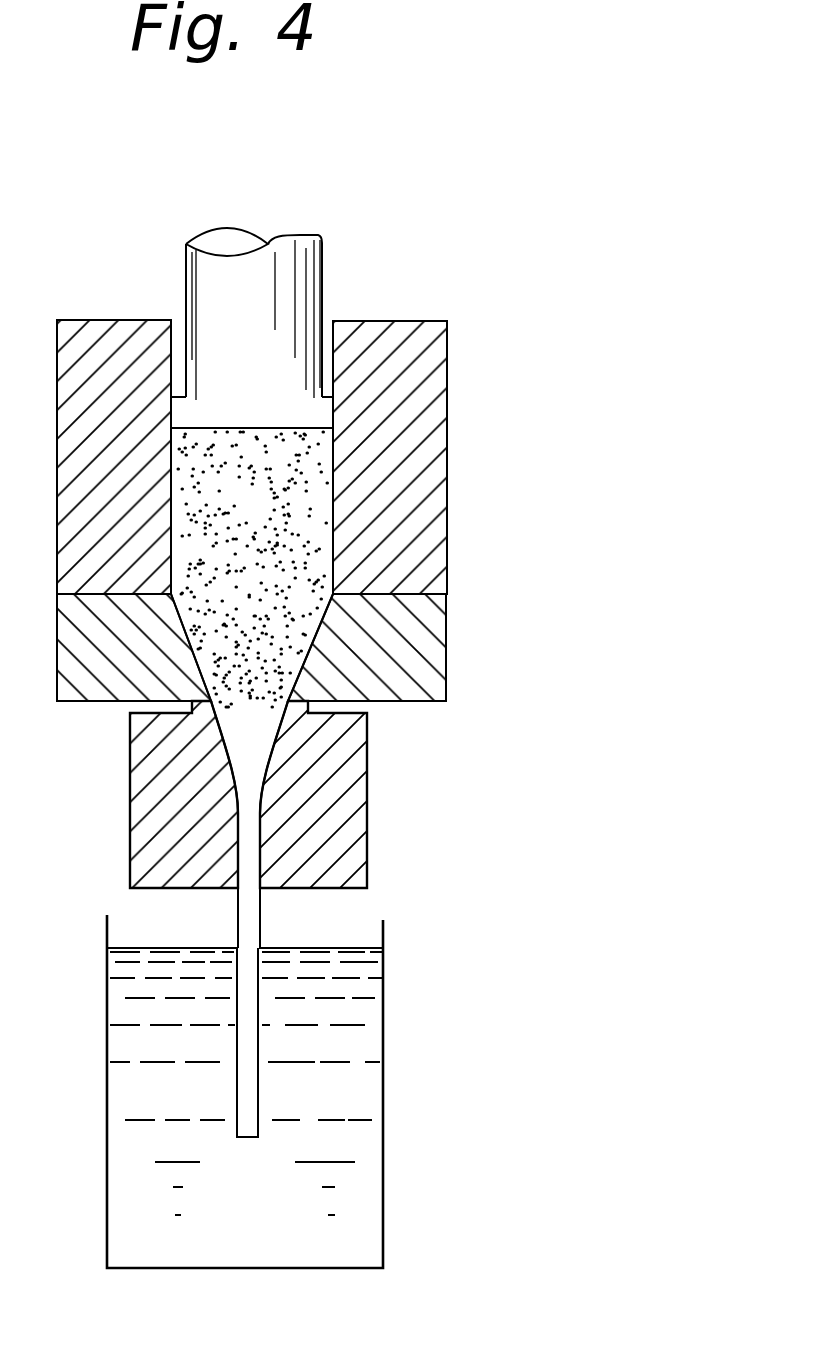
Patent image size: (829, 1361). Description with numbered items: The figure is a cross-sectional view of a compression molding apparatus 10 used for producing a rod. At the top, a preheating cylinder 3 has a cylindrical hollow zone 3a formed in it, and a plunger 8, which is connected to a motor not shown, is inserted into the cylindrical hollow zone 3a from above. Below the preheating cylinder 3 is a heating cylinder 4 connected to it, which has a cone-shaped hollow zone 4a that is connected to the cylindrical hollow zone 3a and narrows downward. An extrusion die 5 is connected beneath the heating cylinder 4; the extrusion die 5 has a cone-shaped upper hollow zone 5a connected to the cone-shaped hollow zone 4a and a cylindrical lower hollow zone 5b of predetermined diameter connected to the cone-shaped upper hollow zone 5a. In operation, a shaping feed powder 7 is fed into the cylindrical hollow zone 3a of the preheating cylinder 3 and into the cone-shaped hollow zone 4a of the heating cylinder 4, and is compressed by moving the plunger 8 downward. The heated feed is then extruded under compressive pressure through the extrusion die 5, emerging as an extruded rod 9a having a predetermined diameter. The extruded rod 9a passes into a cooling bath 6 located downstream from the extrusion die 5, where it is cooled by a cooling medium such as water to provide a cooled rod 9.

The compression molding apparatus 10 is at (146, 254).
The plunger 8 is at (307, 287).
The preheating cylinder 3 is at (397, 398).
The cylindrical hollow zone 3a is at (318, 483).
The shaping feed powder 7 is at (252, 567).
The heating cylinder 4 is at (417, 648).
The cone-shaped hollow zone 4a is at (287, 630).
The extrusion die 5 is at (332, 786).
The cone-shaped upper hollow zone 5a is at (282, 740).
The cylindrical lower hollow zone 5b is at (260, 860).
The extruded rod 9a is at (247, 918).
The cooled rod 9 is at (243, 1073).
The cooling bath 6 is at (353, 1055).